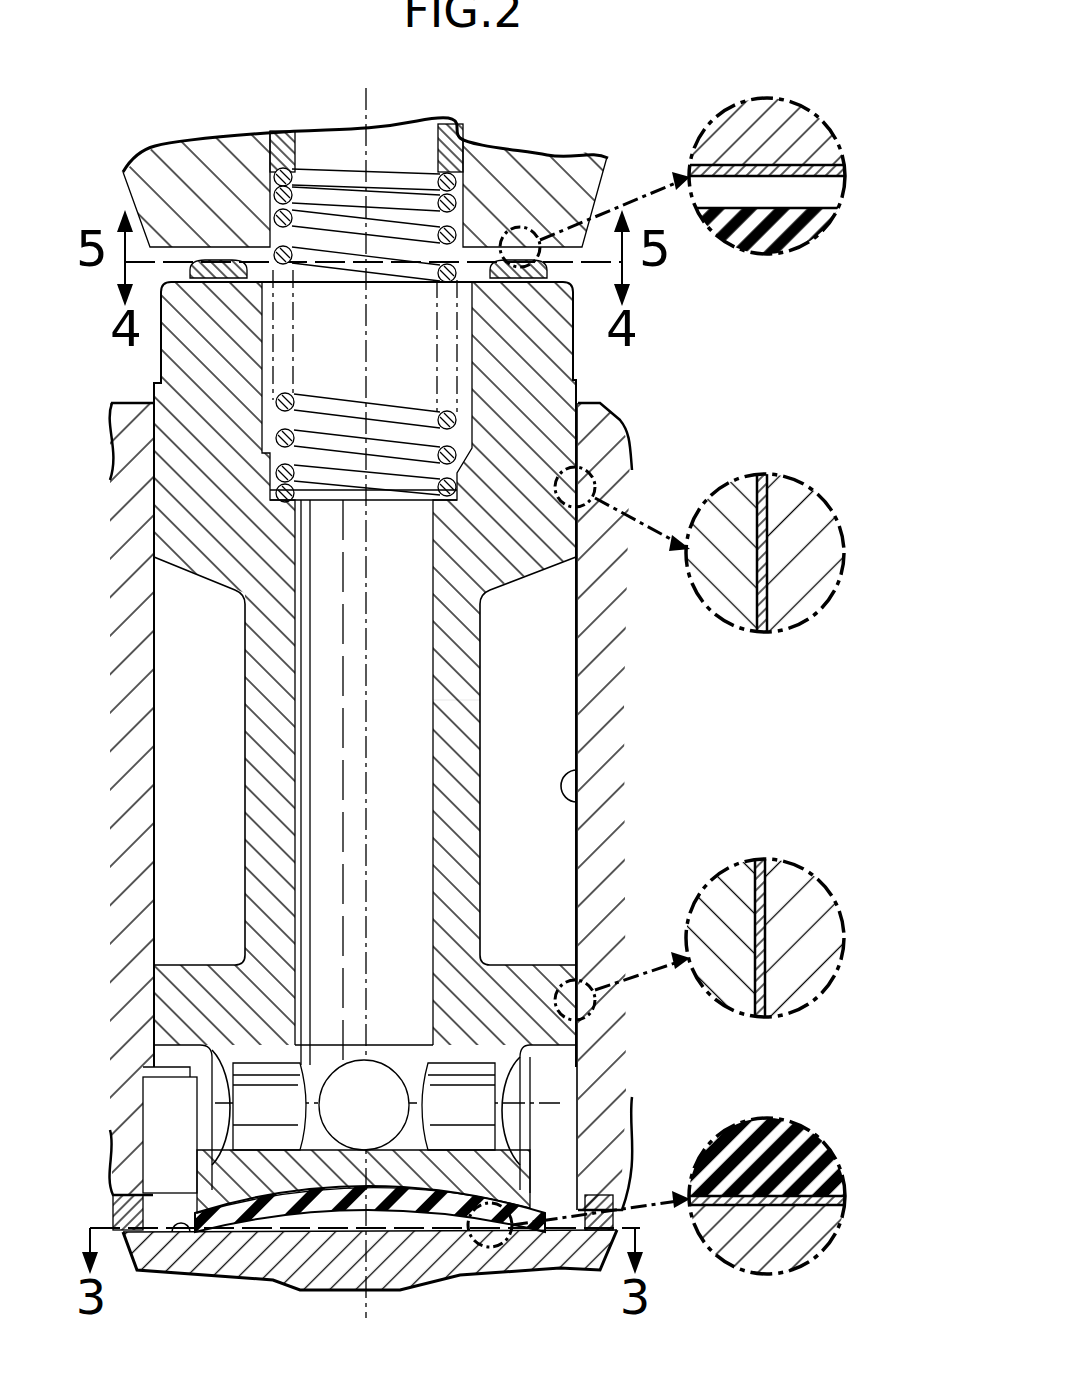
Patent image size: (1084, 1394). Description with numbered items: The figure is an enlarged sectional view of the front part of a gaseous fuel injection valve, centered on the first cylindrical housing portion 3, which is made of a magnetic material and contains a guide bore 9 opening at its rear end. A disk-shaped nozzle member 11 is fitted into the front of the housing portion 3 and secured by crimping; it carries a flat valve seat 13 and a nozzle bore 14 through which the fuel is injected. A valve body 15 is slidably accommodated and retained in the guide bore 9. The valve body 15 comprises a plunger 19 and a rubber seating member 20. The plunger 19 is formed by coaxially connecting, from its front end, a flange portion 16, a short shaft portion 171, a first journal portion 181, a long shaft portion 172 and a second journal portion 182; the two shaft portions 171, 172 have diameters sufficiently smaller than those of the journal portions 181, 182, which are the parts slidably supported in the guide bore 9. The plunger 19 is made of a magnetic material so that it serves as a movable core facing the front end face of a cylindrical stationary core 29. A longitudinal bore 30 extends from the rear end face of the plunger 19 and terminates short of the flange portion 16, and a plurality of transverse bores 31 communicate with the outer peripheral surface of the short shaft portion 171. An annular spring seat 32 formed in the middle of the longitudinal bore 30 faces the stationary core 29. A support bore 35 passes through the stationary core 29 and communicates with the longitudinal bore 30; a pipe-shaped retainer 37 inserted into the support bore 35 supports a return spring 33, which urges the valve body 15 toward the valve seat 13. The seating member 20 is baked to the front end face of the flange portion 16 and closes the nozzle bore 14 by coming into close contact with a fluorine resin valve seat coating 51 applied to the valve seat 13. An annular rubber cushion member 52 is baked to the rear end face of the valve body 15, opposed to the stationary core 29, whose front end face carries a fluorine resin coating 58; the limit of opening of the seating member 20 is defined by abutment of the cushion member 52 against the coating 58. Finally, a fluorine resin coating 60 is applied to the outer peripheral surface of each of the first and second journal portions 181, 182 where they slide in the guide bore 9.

The first cylindrical housing portion 3 is at (598, 710).
The guide bore 9 is at (566, 773).
The nozzle member 11 is at (540, 1262).
The valve seat 13 is at (171, 1232).
The nozzle bore 14 is at (278, 1276).
The valve body 15 is at (492, 390).
The flange portion 16 is at (510, 1183).
The plunger 19 is at (500, 423).
The seating member 20 is at (381, 1217).
The stationary core 29 is at (546, 154).
The longitudinal bore 30 is at (296, 722).
The transverse bores 31 is at (428, 1058).
The spring seat 32 is at (443, 490).
The return spring 33 is at (386, 405).
The support bore 35 is at (282, 134).
The retainer 37 is at (460, 132).
The valve seat coating 51 is at (181, 1226).
The cushion member 52 is at (217, 258).
The coating 58 is at (718, 170).
The coating 60 is at (763, 636).
The short shaft portion 171 is at (540, 1098).
The long shaft portion 172 is at (470, 745).
The first journal portion 181 is at (517, 987).
The second journal portion 182 is at (528, 518).